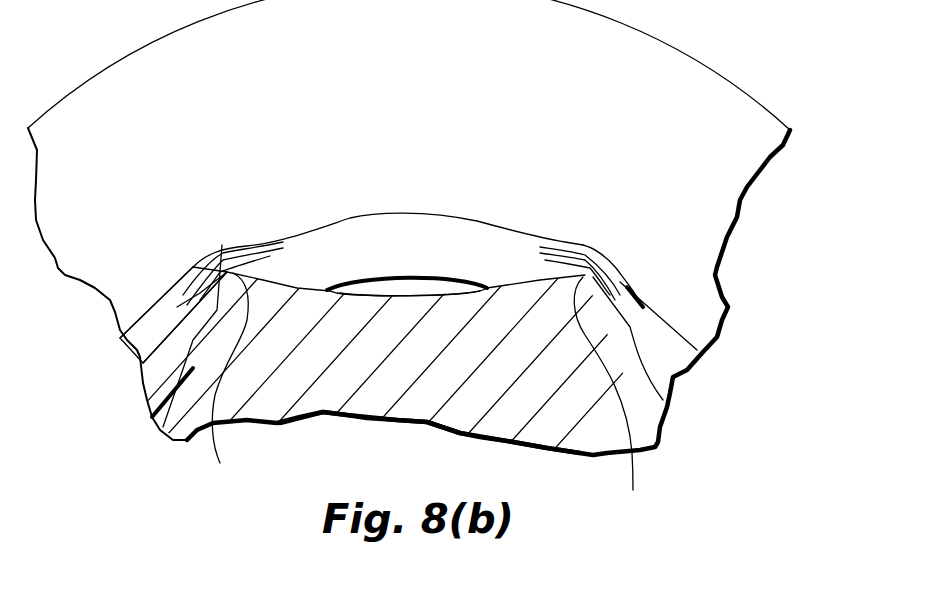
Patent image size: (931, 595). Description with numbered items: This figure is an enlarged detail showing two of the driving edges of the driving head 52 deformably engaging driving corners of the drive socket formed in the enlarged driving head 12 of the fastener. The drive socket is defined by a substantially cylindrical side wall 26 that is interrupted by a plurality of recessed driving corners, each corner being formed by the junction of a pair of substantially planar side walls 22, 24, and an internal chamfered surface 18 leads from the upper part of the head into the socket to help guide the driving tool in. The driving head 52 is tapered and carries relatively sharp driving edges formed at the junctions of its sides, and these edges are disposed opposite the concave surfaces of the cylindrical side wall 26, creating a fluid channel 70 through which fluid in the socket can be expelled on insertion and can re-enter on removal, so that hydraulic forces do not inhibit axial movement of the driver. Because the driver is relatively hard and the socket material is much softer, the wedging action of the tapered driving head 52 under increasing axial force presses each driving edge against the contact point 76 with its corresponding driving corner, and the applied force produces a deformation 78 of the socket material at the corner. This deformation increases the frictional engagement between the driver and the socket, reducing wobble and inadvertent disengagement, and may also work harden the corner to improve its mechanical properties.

The enlarged driving head 12 is at (668, 115).
The internal chamfered surface 18 is at (470, 237).
The planar side wall 22 is at (207, 330).
The planar side wall 24 is at (267, 293).
The cylindrical side wall 26 is at (370, 282).
The driving head 52 is at (357, 378).
The fluid channel 70 is at (430, 290).
The contact point 76 is at (222, 245).
The deformation 78 is at (203, 258).